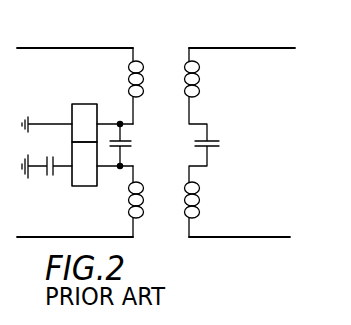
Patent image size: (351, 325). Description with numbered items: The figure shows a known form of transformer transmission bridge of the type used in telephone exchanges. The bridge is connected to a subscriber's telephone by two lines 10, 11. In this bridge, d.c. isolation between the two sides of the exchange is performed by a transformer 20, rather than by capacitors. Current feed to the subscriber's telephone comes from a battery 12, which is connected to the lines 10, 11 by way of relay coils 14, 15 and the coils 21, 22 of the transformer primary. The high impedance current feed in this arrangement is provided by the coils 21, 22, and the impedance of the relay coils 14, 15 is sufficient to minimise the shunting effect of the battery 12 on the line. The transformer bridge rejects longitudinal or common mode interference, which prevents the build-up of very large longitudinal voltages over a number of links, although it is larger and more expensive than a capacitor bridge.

The line 10 is at (62, 47).
The line 11 is at (68, 236).
The battery 12 is at (48, 177).
The relay coil 14 is at (82, 111).
The relay coil 15 is at (86, 176).
The transformer 20 is at (178, 40).
The coil of the transformer primary 21 is at (137, 91).
The coil of the transformer primary 22 is at (137, 212).